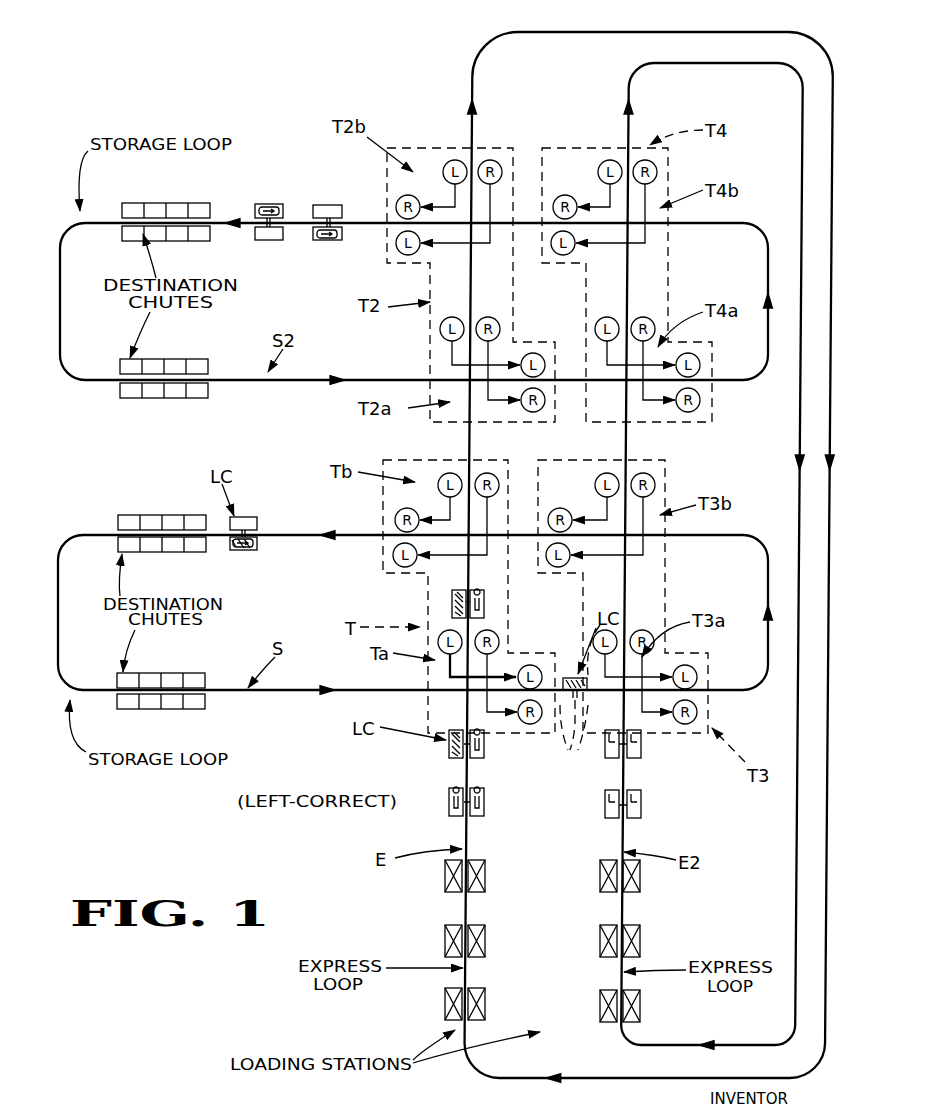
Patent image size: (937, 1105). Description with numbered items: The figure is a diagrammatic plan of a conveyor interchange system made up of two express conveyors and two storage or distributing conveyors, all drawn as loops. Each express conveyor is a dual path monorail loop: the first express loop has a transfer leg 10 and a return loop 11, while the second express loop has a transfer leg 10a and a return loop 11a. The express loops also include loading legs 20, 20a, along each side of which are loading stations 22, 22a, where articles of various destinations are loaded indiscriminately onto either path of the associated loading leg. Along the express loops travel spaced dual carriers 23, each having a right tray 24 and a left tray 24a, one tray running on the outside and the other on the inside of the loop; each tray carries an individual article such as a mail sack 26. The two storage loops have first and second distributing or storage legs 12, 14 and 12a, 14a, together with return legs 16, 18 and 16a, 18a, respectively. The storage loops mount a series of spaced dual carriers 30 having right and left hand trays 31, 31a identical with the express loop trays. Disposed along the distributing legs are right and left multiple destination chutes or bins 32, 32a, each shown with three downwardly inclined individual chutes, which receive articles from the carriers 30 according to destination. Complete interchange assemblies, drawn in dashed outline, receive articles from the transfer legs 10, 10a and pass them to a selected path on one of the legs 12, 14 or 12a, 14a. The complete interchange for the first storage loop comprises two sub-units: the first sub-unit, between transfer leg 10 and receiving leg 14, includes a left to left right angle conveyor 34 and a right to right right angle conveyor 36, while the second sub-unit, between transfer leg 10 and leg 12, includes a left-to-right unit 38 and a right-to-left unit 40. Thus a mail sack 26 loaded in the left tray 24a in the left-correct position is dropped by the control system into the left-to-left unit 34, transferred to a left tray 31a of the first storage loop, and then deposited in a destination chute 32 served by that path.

The transfer leg 10 is at (464, 830).
The transfer leg 10a is at (622, 835).
The return loop 11 is at (795, 809).
The return loop 11a is at (823, 828).
The distributing leg 12 is at (372, 536).
The distributing leg 12a is at (376, 231).
The receiving leg 14 is at (371, 688).
The distributing leg 14a is at (398, 378).
The return leg 16 is at (58, 657).
The return leg 16a is at (62, 277).
The return leg 18 is at (768, 570).
The return leg 18a is at (768, 268).
The loading leg 20 is at (463, 906).
The loading leg 20a is at (622, 911).
The loading stations 22 is at (476, 995).
The loading stations 22a is at (610, 990).
The dual carrier 23 is at (449, 600).
The tray 24 is at (478, 790).
The tray 24a is at (456, 760).
The mail sack 26 is at (485, 602).
The dual carrier 30 is at (330, 200).
The tray 31 is at (275, 206).
The tray 31a is at (272, 240).
The destination chute 32 is at (162, 203).
The destination chute 32a is at (162, 238).
The left to left right angle conveyor 34 is at (449, 677).
The right to right right angle conveyor 36 is at (488, 660).
The L–R unit 38 is at (448, 514).
The R–L unit 40 is at (487, 513).